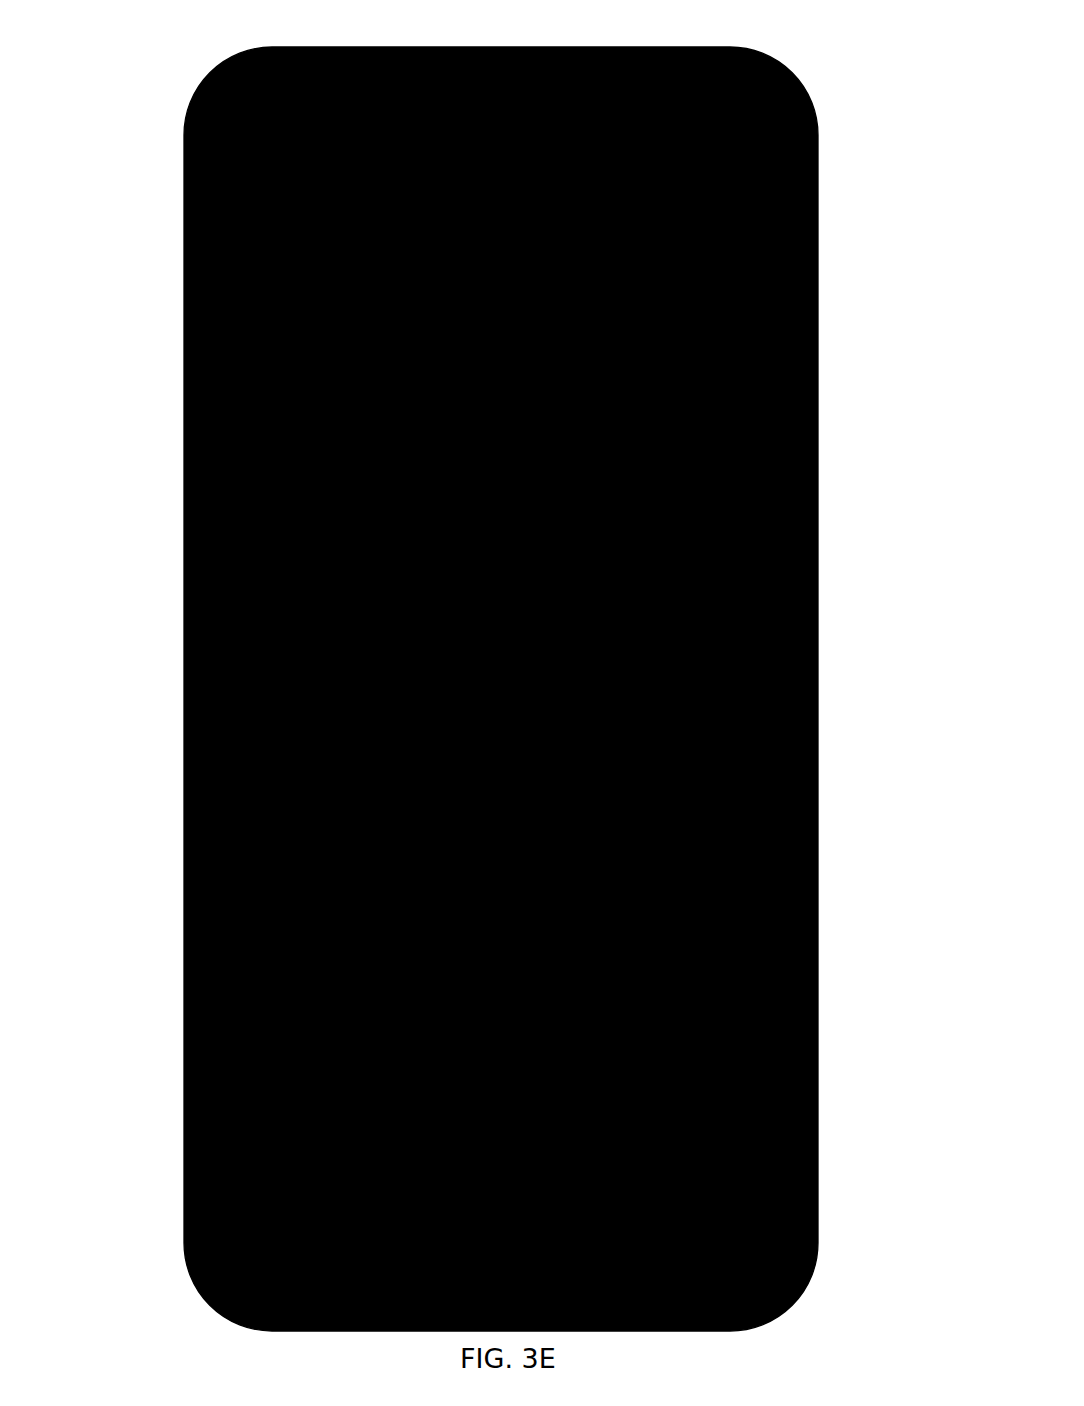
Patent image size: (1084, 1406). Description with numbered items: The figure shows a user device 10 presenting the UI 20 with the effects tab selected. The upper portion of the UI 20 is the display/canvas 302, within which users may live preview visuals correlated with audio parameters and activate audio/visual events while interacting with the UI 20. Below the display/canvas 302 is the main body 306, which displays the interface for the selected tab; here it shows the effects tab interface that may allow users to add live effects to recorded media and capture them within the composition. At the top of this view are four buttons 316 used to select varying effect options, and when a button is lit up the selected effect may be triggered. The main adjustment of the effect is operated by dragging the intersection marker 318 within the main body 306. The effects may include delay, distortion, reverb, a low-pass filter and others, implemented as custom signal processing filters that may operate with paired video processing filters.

The user device 10 is at (501, 665).
The UI 20 is at (240, 813).
The display/canvas 302 is at (775, 537).
The main body 306 is at (770, 1072).
The buttons 316 is at (773, 787).
The intersection marker 318 is at (653, 920).